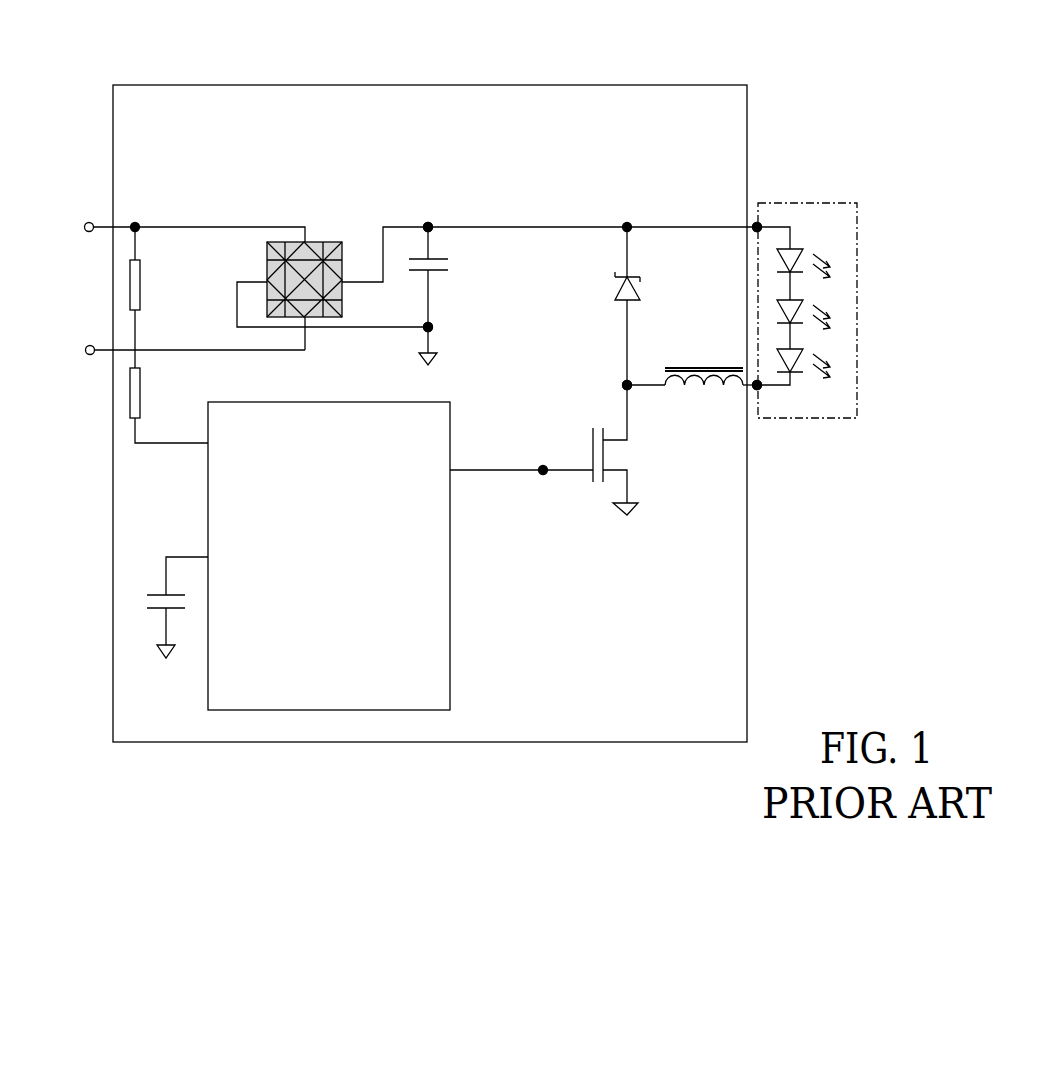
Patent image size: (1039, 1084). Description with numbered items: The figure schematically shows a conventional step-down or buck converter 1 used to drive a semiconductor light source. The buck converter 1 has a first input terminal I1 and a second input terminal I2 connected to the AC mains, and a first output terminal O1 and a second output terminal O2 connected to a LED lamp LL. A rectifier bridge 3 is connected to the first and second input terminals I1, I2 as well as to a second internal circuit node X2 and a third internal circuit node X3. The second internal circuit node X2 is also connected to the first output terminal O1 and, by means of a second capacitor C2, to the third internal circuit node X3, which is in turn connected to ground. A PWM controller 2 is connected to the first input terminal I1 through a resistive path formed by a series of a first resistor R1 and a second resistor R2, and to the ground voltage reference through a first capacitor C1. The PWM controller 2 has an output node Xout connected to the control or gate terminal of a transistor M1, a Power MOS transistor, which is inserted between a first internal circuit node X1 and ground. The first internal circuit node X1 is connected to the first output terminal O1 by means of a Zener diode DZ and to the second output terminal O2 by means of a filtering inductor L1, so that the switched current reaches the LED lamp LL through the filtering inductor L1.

The buck converter 1 is at (135, 117).
The PWM controller 2 is at (427, 645).
The rectifier bridge 3 is at (305, 280).
The first input terminal I1 is at (82, 208).
The second input terminal I2 is at (182, 334).
The first resistor R1 is at (111, 297).
The second resistor R2 is at (145, 405).
The first capacitor C1 is at (156, 624).
The second capacitor C2 is at (453, 309).
The first internal circuit node X1 is at (620, 383).
The second internal circuit node X2 is at (430, 227).
The third internal circuit node X3 is at (428, 327).
The output node Xout is at (543, 470).
The Zener diode DZ is at (650, 306).
The filtering inductor L1 is at (692, 355).
The transistor M1 is at (630, 474).
The first output terminal O1 is at (757, 227).
The second output terminal O2 is at (757, 385).
The LED lamp LL is at (835, 225).